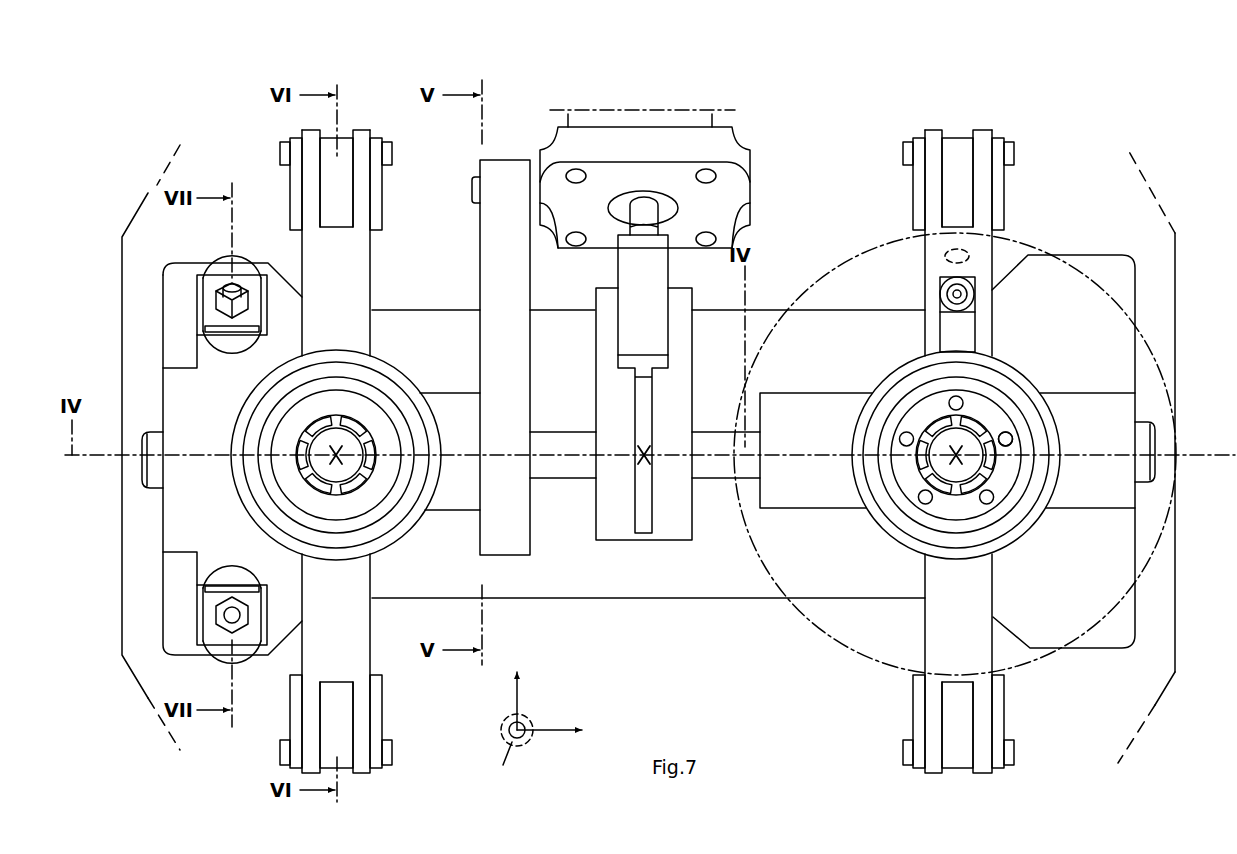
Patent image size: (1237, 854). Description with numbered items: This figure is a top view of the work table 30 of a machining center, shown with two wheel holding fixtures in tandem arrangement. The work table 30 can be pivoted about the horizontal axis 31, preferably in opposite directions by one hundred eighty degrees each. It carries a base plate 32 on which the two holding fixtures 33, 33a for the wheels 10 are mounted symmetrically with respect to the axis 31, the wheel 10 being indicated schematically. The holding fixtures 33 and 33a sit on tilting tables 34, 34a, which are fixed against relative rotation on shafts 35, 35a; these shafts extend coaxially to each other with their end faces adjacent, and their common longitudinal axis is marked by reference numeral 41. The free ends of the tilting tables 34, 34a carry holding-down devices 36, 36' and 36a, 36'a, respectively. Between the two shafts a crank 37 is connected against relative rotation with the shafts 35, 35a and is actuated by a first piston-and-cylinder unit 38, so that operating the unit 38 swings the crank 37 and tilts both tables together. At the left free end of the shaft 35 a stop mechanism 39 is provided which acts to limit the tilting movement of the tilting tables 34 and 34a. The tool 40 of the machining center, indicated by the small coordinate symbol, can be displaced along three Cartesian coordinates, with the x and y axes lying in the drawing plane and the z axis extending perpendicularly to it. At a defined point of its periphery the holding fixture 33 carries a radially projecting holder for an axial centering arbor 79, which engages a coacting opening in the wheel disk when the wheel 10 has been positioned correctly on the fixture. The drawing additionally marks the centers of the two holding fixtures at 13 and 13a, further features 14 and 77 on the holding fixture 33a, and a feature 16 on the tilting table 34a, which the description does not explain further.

The wheel 10 is at (817, 628).
The axis of flywheel 13 is at (343, 455).
The axis of second flywheel 13a is at (953, 447).
The fastening bolt holes 14 is at (1013, 427).
The bore 16 is at (970, 253).
The work table 30 is at (133, 290).
The horizontal axis 31 is at (645, 468).
The base plate 32 is at (550, 593).
The holding fixture 33 is at (383, 528).
The holding fixture 33a is at (898, 513).
The tilting table 34 is at (366, 270).
The tilting table 34a is at (977, 573).
The shaft 35 is at (153, 432).
The shaft 35a is at (710, 437).
The holding-down device 36 is at (334, 207).
The holding-down device 36' is at (339, 698).
The holding-down device 36a is at (965, 145).
The holding-down device 36'a is at (967, 693).
The crank 37 is at (605, 357).
The first piston-and-cylinder unit 38 is at (663, 117).
The stop mechanism 39 is at (175, 513).
The tool 40 is at (500, 730).
The longitudinal axis 41 is at (1221, 448).
The bolt hole 77 is at (1020, 440).
The axial centering arbor 79 is at (975, 293).